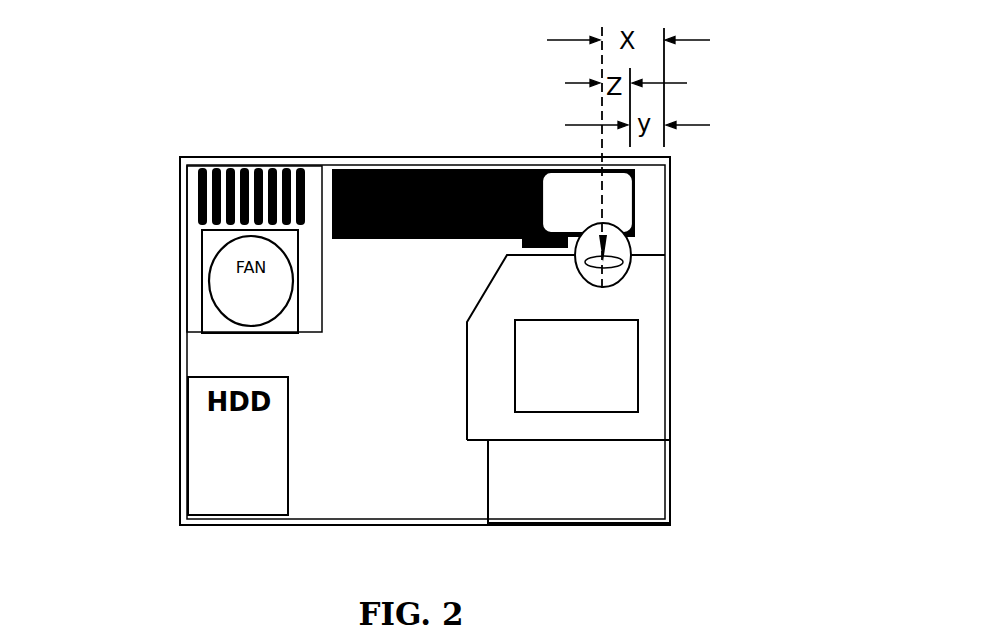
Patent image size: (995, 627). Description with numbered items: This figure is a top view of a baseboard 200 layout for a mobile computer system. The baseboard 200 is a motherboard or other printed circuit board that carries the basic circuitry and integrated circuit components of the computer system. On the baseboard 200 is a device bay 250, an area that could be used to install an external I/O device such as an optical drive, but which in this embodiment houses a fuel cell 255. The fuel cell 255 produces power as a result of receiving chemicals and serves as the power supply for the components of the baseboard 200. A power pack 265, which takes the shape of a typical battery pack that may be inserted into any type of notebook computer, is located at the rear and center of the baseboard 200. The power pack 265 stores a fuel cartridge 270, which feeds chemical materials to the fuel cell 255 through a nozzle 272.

The baseboard 200 is at (183, 353).
The device bay 250 is at (685, 450).
The fuel cell 255 is at (659, 374).
The power pack 265 is at (414, 151).
The fuel cartridge 270 is at (654, 186).
The nozzle 272 is at (651, 251).